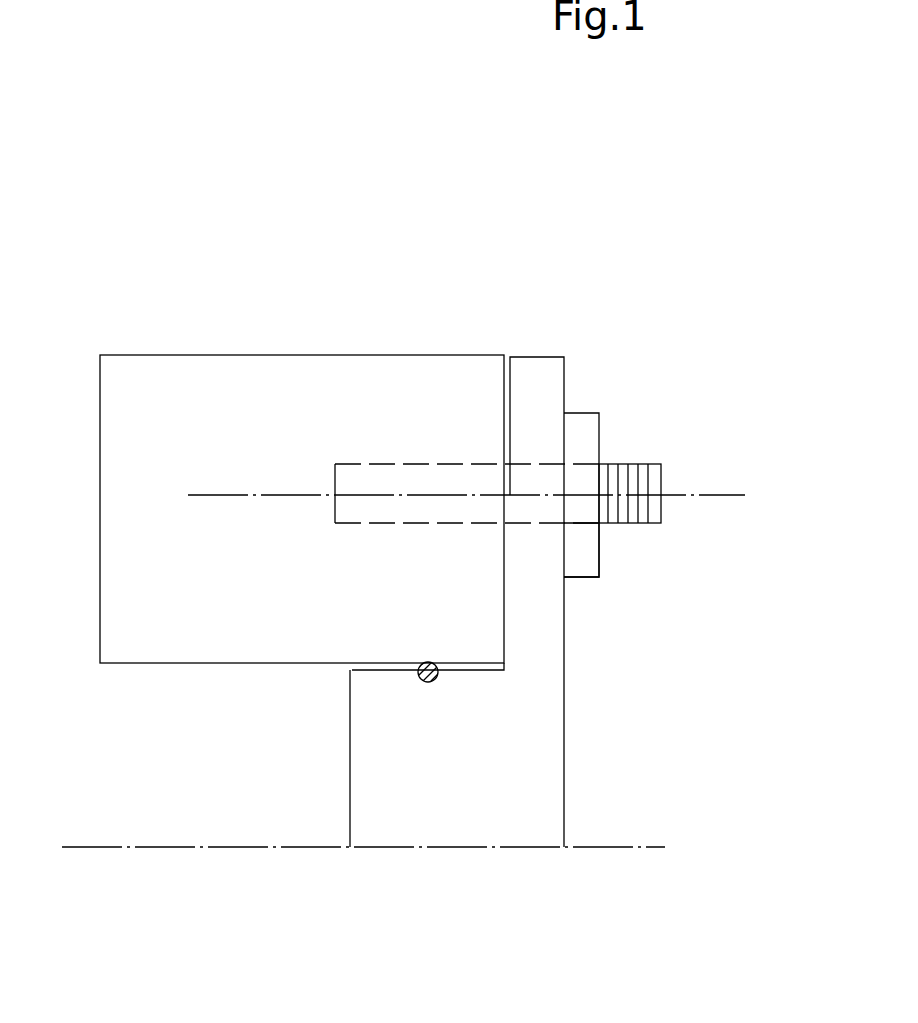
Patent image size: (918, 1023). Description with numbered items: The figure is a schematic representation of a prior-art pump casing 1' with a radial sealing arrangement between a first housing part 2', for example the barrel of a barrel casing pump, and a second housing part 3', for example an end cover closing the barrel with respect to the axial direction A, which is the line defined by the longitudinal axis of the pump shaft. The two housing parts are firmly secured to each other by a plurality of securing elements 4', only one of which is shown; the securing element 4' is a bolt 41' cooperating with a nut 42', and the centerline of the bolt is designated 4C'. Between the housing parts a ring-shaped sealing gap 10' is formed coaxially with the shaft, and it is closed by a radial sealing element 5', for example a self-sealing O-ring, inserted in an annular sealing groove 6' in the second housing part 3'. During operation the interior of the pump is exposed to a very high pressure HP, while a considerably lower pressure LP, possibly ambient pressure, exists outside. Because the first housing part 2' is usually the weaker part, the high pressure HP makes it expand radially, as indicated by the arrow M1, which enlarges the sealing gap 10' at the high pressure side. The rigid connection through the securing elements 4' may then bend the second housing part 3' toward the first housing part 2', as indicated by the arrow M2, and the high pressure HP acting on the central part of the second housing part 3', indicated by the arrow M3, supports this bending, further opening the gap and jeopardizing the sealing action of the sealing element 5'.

The pump casing 1' is at (423, 166).
The first housing part 2' is at (302, 467).
The second housing part 3' is at (577, 602).
The sealing gap 10' is at (314, 757).
The securing element 4' is at (625, 453).
The bolt 41' is at (656, 513).
The nut 42' is at (615, 581).
The centerline of the bolt 4C' is at (493, 476).
The radial sealing element 5' is at (459, 688).
The annular sealing groove 6' is at (398, 728).
The arrow indicating radial expansion M1 is at (152, 405).
The arrow indicating bending of the second housing part M2 is at (514, 378).
The arrow indicating high pressure acting on the second housing part M3 is at (348, 776).
The axial direction A is at (160, 848).
The high pressure HP is at (201, 758).
The low pressure LP is at (665, 696).